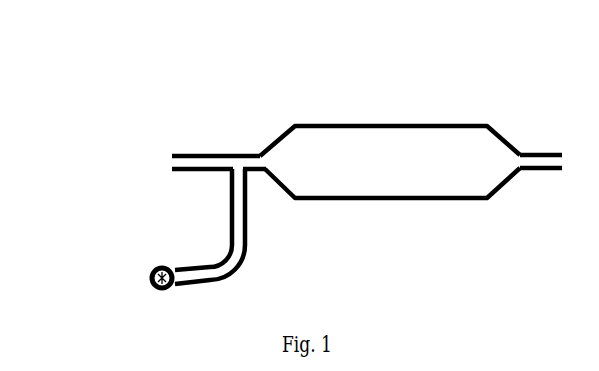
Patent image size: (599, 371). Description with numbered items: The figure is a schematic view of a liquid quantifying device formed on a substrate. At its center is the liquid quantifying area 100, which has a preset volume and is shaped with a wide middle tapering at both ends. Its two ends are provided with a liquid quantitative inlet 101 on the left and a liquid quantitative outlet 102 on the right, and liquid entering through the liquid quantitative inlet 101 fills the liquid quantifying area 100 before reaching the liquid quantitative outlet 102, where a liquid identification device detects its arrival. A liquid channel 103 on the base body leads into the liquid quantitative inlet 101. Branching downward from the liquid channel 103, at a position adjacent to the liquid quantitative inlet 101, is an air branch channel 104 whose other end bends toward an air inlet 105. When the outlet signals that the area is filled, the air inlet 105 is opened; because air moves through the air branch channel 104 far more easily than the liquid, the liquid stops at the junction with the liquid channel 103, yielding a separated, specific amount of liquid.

The liquid quantifying area 100 is at (387, 147).
The liquid quantitative inlet 101 is at (258, 156).
The liquid quantitative outlet 102 is at (520, 155).
The liquid channel 103 is at (195, 156).
The air branch channel 104 is at (244, 253).
The air inlet 105 is at (150, 278).